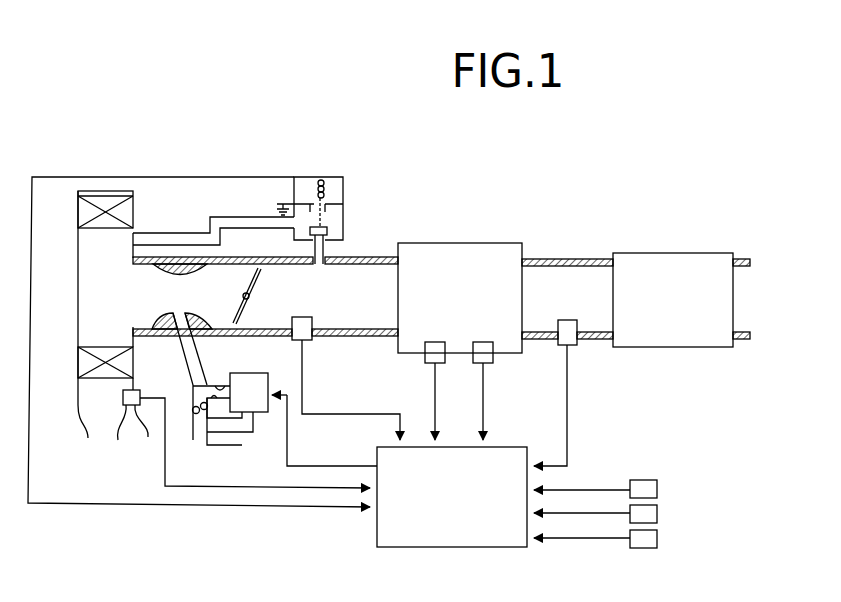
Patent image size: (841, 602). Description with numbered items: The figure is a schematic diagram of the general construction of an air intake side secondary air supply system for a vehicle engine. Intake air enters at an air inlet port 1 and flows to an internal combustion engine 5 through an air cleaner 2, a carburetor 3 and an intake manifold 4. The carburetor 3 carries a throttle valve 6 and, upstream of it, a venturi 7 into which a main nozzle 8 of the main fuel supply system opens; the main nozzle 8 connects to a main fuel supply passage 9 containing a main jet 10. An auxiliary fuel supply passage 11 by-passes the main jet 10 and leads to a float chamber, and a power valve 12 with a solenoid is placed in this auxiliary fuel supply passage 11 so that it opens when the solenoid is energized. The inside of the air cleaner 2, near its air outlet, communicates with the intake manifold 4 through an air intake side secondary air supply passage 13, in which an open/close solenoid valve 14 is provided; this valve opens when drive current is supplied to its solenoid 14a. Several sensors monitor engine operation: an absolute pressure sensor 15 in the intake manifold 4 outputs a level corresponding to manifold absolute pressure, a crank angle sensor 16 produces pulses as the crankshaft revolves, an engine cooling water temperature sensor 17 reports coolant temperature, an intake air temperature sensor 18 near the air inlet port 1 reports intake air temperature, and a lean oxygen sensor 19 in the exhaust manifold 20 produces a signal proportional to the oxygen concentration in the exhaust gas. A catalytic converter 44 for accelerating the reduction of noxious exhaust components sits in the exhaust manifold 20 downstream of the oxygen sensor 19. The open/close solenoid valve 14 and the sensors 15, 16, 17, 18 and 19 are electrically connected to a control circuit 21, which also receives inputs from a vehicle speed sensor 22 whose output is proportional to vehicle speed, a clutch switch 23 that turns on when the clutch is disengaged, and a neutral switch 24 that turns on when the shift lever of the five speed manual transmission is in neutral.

The air inlet port 1 is at (102, 432).
The air cleaner 2 is at (80, 222).
The carburetor 3 is at (172, 345).
The intake manifold 4 is at (338, 337).
The internal combustion engine 5 is at (440, 243).
The throttle valve 6 is at (250, 306).
The venturi 7 is at (160, 316).
The main nozzle 8 is at (188, 313).
The main fuel supply passage 9 is at (200, 376).
The main jet 10 is at (196, 414).
The auxiliary fuel supply passage 11 is at (211, 384).
The power valve 12 is at (267, 414).
The air intake side secondary air supply passage 13 is at (175, 233).
The open/close solenoid valve 14 is at (346, 203).
The solenoid 14a is at (322, 180).
The absolute pressure sensor 15 is at (292, 337).
The crank angle sensor 16 is at (423, 356).
The engine cooling water temperature sensor 17 is at (490, 363).
The intake air temperature sensor 18 is at (244, 439).
The lean O2 sensor 19 is at (560, 345).
The exhaust manifold 20 is at (562, 259).
The control circuit 21 is at (497, 548).
The vehicle speed sensor 22 is at (658, 490).
The clutch switch 23 is at (658, 516).
The neutral switch 24 is at (658, 541).
The catalytic converter 44 is at (672, 348).